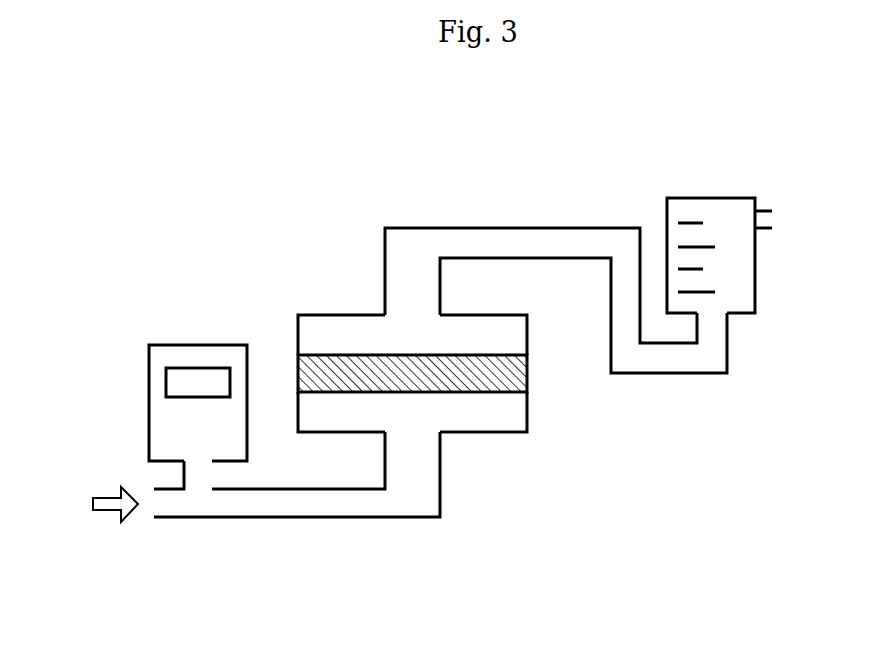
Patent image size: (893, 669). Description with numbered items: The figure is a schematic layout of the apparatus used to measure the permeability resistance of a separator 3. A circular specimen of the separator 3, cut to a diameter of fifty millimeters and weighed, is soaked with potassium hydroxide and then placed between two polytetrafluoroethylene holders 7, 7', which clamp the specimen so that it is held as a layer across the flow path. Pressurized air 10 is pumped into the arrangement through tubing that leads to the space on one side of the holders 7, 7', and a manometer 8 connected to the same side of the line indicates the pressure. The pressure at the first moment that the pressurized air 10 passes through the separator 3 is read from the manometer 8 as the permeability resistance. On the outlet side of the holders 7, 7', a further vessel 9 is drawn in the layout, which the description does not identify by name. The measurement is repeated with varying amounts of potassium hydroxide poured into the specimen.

The separator 3 is at (322, 352).
The polytetrafluoroethylene holder 7 is at (462, 389).
The polytetrafluoroethylene holder 7' is at (456, 453).
The manometer 8 is at (160, 348).
The gas supply cell 9 is at (687, 208).
The pressurized air 10 is at (128, 512).